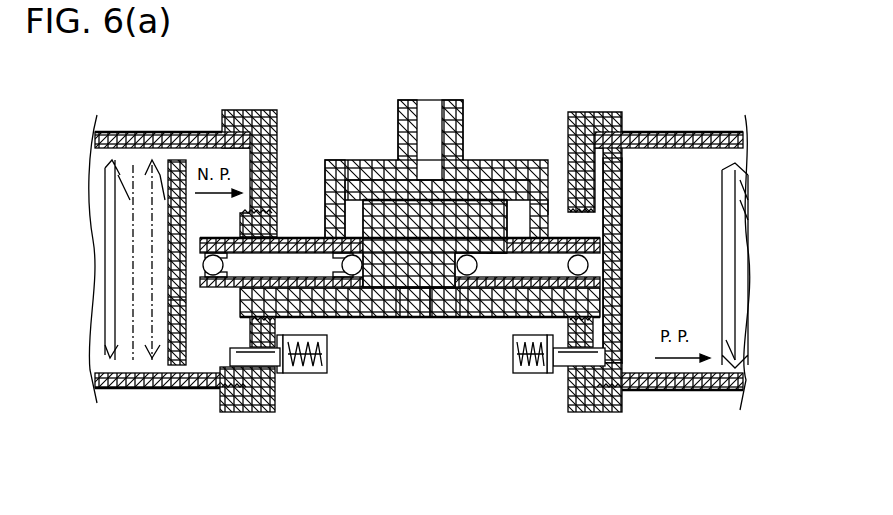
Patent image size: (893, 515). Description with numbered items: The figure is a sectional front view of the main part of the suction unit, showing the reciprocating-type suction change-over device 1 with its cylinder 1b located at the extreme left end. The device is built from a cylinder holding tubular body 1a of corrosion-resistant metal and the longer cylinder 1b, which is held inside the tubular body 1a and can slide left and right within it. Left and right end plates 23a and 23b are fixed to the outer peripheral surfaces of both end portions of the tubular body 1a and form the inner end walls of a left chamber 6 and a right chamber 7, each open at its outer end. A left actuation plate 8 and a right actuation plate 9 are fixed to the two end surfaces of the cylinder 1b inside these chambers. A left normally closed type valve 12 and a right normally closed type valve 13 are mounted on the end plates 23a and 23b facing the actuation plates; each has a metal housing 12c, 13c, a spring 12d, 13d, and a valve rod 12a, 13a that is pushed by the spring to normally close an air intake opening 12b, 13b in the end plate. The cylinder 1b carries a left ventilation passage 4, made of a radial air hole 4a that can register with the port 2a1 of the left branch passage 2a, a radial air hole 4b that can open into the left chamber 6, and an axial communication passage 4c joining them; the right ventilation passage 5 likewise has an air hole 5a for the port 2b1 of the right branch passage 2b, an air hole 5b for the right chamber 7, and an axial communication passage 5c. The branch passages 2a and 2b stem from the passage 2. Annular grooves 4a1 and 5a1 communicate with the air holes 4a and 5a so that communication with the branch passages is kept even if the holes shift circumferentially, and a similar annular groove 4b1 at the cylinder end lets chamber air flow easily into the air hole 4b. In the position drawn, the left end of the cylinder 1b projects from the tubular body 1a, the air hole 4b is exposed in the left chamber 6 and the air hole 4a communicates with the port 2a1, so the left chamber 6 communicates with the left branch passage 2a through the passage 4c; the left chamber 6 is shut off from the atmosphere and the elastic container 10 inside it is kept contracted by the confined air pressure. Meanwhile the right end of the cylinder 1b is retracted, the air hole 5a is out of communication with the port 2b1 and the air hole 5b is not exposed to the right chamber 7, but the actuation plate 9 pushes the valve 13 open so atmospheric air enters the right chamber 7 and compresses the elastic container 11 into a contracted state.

The reciprocating-type suction change-over device 1 is at (400, 242).
The cylinder holding tubular body 1a is at (430, 318).
The cylinder 1b is at (416, 318).
The passage 2 is at (499, 124).
The left branch passage 2a is at (357, 187).
The port of the left branch passage 2a1 is at (380, 160).
The right branch passage 2b is at (477, 165).
The port of the right branch passage 2b1 is at (546, 203).
The left ventilation passage 4 is at (333, 285).
The air hole 4a is at (322, 268).
The annular groove 4a1 is at (347, 272).
The air hole 4b is at (190, 268).
The annular groove 4b1 is at (178, 305).
The axial communication passage 4c is at (342, 376).
The right ventilation passage 5 is at (516, 236).
The air hole 5a is at (444, 290).
The annular groove 5a1 is at (480, 318).
The air hole 5b is at (582, 262).
The axial communication passage 5c is at (488, 255).
The left chamber 6 is at (127, 157).
The right chamber 7 is at (680, 134).
The left actuation plate 8 is at (203, 265).
The right actuation plate 9 is at (625, 348).
The elastic container 10 is at (110, 220).
The elastic container 11 is at (745, 190).
The left normally closed type valve 12 is at (277, 404).
The left valve rod 12a is at (226, 413).
The air intake opening 12b is at (268, 348).
The metal housing 12c is at (278, 414).
The spring 12d is at (328, 375).
The right normally closed type valve 13 is at (581, 390).
The right valve rod 13a is at (583, 414).
The air intake opening 13b is at (590, 332).
The metal housing 13c is at (547, 375).
The spring 13d is at (524, 378).
The left end plate 23a is at (244, 110).
The right end plate 23b is at (577, 112).